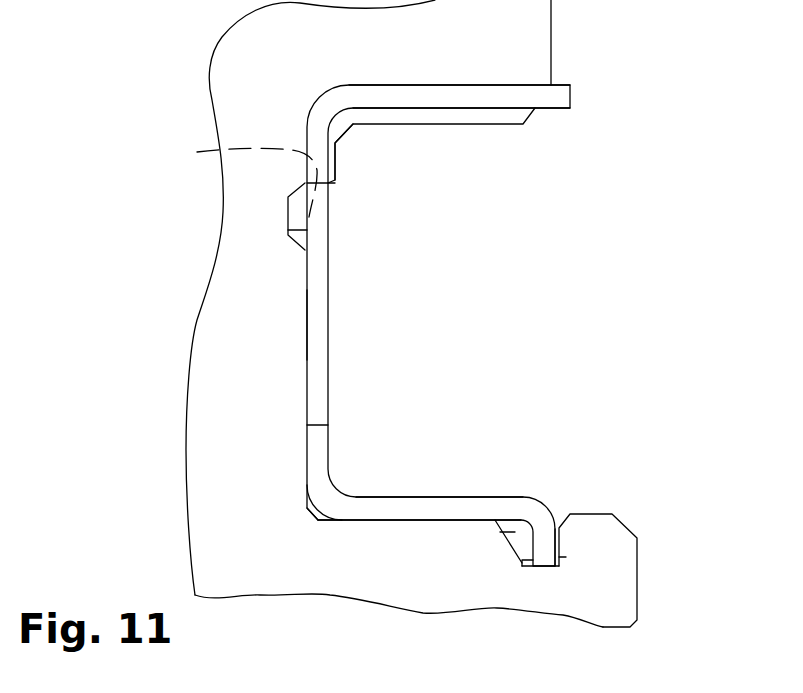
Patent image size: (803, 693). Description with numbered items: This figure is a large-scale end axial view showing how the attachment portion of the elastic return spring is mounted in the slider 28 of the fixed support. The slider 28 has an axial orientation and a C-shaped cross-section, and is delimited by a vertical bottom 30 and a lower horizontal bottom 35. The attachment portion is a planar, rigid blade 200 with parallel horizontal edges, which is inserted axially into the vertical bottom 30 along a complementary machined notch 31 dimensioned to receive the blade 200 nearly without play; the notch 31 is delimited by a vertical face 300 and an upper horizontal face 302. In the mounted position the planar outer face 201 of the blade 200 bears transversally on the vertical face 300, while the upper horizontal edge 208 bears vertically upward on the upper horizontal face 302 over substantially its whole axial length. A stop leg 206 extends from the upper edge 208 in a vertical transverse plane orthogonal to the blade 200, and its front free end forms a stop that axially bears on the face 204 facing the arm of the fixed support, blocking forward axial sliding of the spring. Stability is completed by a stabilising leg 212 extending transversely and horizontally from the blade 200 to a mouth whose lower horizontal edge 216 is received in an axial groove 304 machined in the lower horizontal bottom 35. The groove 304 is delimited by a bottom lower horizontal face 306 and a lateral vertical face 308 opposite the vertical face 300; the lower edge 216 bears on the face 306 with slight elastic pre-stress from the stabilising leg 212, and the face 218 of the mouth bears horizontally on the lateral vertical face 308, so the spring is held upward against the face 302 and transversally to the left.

The slider 28 is at (560, 177).
The stop leg 206 is at (515, 83).
The blade 200 is at (332, 393).
The face 204 is at (473, 117).
The vertical bottom 30 is at (340, 160).
The stabilising leg 212 is at (483, 495).
The notch 31 is at (308, 490).
The upper horizontal face 302 is at (285, 215).
The planar outer face 201 is at (287, 230).
The upper horizontal edge 208 is at (188, 153).
The vertical face 300 is at (307, 300).
The lateral vertical face 308 is at (555, 550).
The lower horizontal bottom 35 is at (597, 510).
The face of the mouth 218 is at (559, 557).
The lower horizontal edge 216 is at (544, 567).
The bottom lower horizontal face 306 is at (522, 563).
The axial groove 304 is at (500, 532).